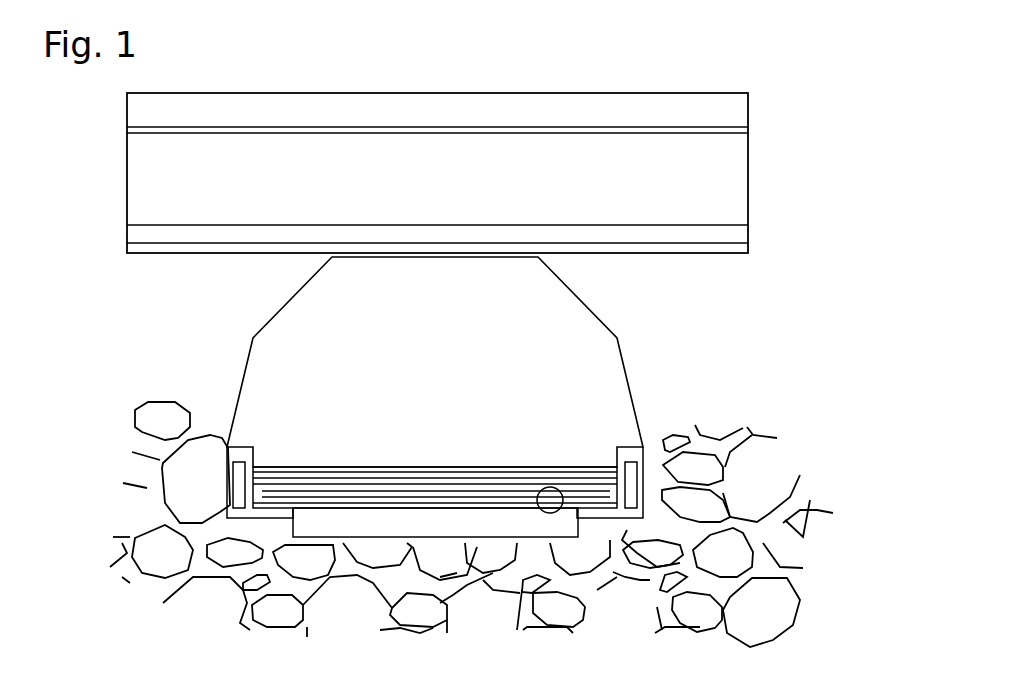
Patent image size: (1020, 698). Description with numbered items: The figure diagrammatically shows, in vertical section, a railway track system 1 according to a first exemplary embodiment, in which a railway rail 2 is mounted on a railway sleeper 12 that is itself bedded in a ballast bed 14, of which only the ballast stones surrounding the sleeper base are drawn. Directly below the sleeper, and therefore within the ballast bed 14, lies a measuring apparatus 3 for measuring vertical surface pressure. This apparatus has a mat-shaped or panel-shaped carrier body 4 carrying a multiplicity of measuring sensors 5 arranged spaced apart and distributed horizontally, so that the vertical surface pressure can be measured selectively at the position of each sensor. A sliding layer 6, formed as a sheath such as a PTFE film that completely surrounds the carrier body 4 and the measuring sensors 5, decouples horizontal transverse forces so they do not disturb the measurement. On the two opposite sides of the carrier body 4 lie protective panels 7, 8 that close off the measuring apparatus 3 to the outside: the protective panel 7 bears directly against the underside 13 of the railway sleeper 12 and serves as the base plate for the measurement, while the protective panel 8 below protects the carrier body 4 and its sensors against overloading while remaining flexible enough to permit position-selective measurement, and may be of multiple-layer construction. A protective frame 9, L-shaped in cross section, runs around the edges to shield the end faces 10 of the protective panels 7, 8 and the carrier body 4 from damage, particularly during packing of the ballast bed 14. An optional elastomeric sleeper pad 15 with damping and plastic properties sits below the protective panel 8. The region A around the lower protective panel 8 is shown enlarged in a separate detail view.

The railway track system 1 is at (638, 80).
The railway rail 2 is at (730, 188).
The measuring apparatus 3 is at (343, 492).
The carrier body 4 is at (617, 502).
The measuring sensors 5 is at (460, 492).
The sliding layer 6 is at (617, 486).
The protective panel 7 is at (617, 478).
The protective panel 8 is at (633, 499).
The protective frame 9 is at (230, 520).
The end faces 10 is at (258, 488).
The railway sleeper 12 is at (585, 373).
The underside 13 is at (527, 468).
The ballast bed 14 is at (762, 605).
The sleeper pad 15 is at (560, 530).
The region A is at (549, 513).